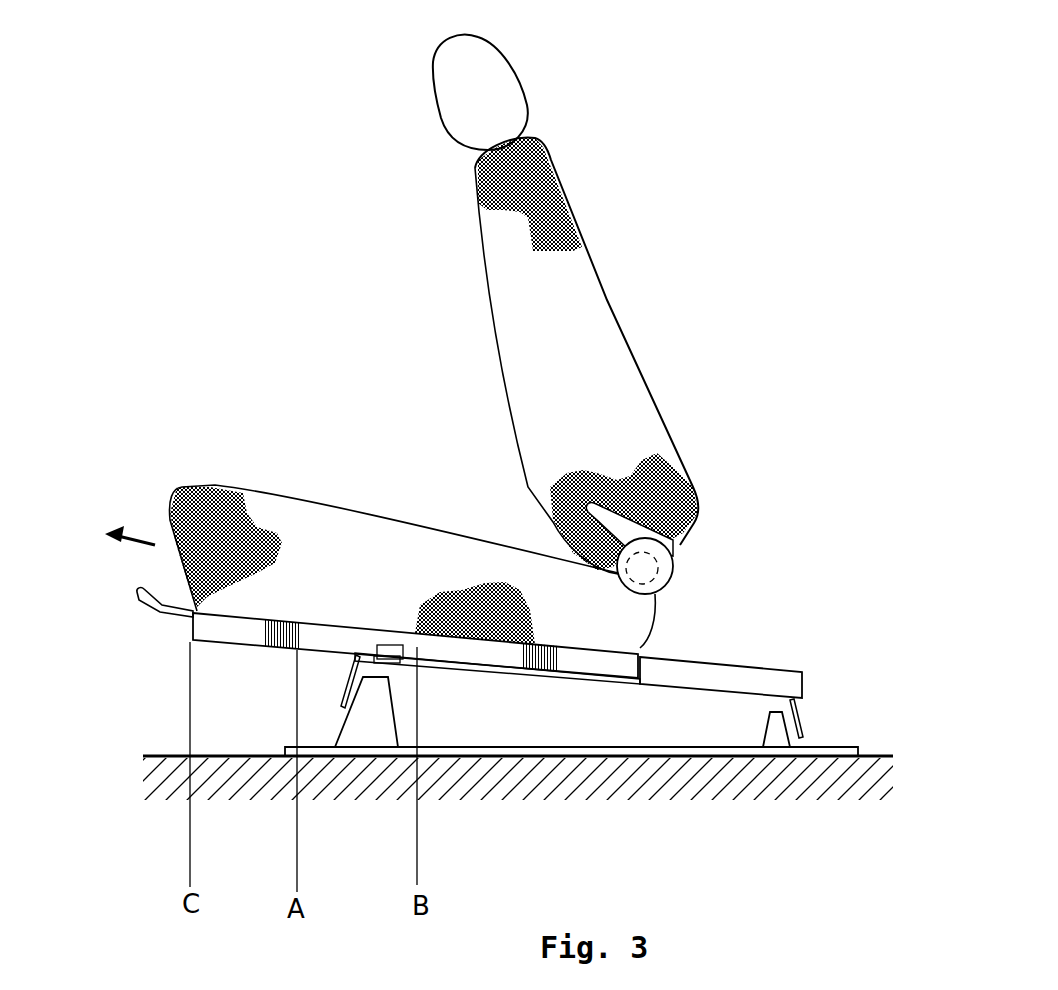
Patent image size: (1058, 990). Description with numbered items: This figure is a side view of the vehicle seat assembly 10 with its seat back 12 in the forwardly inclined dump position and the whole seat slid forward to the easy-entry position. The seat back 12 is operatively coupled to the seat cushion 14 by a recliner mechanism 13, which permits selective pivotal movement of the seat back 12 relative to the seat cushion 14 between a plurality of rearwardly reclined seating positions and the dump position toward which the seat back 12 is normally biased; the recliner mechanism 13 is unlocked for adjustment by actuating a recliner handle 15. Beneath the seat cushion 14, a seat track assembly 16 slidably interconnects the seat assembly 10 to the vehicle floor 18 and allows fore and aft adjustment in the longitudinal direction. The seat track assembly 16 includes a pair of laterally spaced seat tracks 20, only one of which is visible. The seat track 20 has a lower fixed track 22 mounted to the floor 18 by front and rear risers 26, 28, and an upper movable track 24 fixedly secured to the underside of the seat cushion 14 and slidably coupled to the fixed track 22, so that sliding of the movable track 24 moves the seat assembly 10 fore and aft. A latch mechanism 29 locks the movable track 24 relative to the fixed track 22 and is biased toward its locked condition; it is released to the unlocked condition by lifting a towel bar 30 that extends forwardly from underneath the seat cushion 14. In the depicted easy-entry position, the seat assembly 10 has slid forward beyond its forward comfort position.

The seat assembly 10 is at (265, 94).
The seat back 12 is at (502, 308).
The recliner mechanism 13 is at (682, 560).
The seat cushion 14 is at (318, 515).
The recliner handle 15 is at (596, 507).
The seat track assembly 16 is at (457, 682).
The floor 18 is at (188, 756).
The seat track 20 is at (552, 670).
The lower fixed track 22 is at (763, 678).
The upper movable track 24 is at (640, 667).
The front riser 26 is at (343, 690).
The rear riser 28 is at (805, 721).
The latch mechanism 29 is at (387, 647).
The towel bar 30 is at (152, 613).